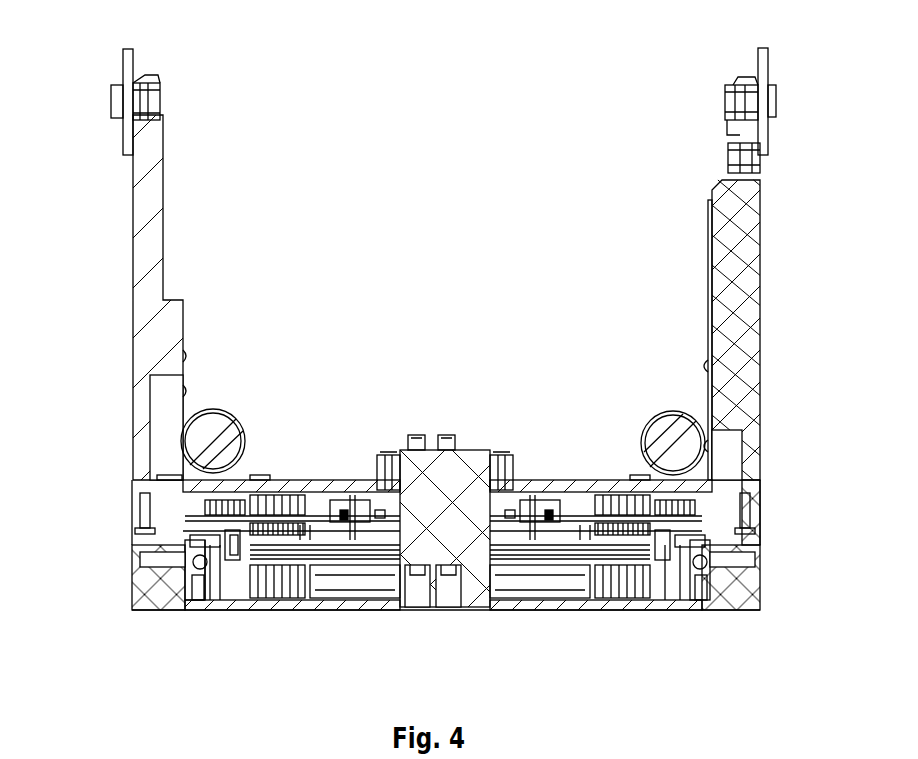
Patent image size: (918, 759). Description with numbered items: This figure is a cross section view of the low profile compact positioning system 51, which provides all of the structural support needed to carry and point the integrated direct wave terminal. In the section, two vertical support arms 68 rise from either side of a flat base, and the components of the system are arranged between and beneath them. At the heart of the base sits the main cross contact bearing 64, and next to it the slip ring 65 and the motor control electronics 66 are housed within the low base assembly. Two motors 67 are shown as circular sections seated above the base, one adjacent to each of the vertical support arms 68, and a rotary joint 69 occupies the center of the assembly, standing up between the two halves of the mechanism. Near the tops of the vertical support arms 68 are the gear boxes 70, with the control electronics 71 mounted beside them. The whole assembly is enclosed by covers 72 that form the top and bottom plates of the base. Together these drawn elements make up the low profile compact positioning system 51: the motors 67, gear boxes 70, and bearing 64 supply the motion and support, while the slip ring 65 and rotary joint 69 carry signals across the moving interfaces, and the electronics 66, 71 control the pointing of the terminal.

The low profile compact positioning system 51 is at (102, 592).
The main cross contact bearing 64 is at (200, 556).
The slip ring 65 is at (316, 562).
The motor control electronics 66 is at (318, 516).
The motors 67 is at (223, 410).
The vertical support arms 68 is at (132, 345).
The rotary joint 69 is at (469, 449).
The gear boxes 70 is at (124, 68).
The control electronics 71 is at (158, 92).
The covers 72 is at (550, 479).